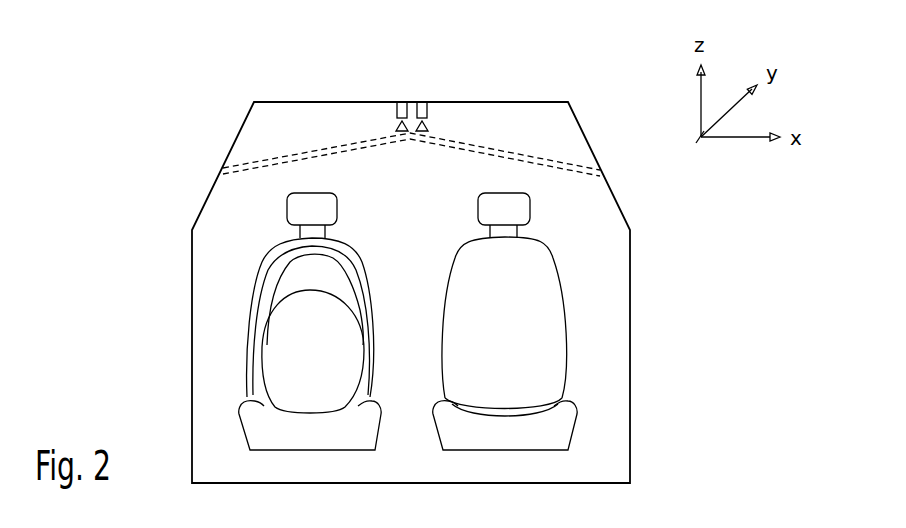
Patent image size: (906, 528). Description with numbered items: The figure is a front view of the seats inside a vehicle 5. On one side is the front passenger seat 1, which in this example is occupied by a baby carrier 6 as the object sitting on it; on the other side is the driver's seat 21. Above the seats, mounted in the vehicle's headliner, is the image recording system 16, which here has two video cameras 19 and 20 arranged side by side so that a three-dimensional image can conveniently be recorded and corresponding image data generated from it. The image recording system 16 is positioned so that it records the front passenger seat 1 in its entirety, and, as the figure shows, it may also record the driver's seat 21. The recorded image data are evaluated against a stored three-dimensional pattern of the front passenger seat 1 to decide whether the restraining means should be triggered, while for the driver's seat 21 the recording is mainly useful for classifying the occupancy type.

The front passenger seat 1 is at (350, 241).
The vehicle 5 is at (630, 325).
The baby carrier 6 is at (343, 327).
The image recording system 16 is at (416, 81).
The video camera 19 is at (396, 111).
The video camera 20 is at (428, 111).
The driver's seat 21 is at (548, 283).